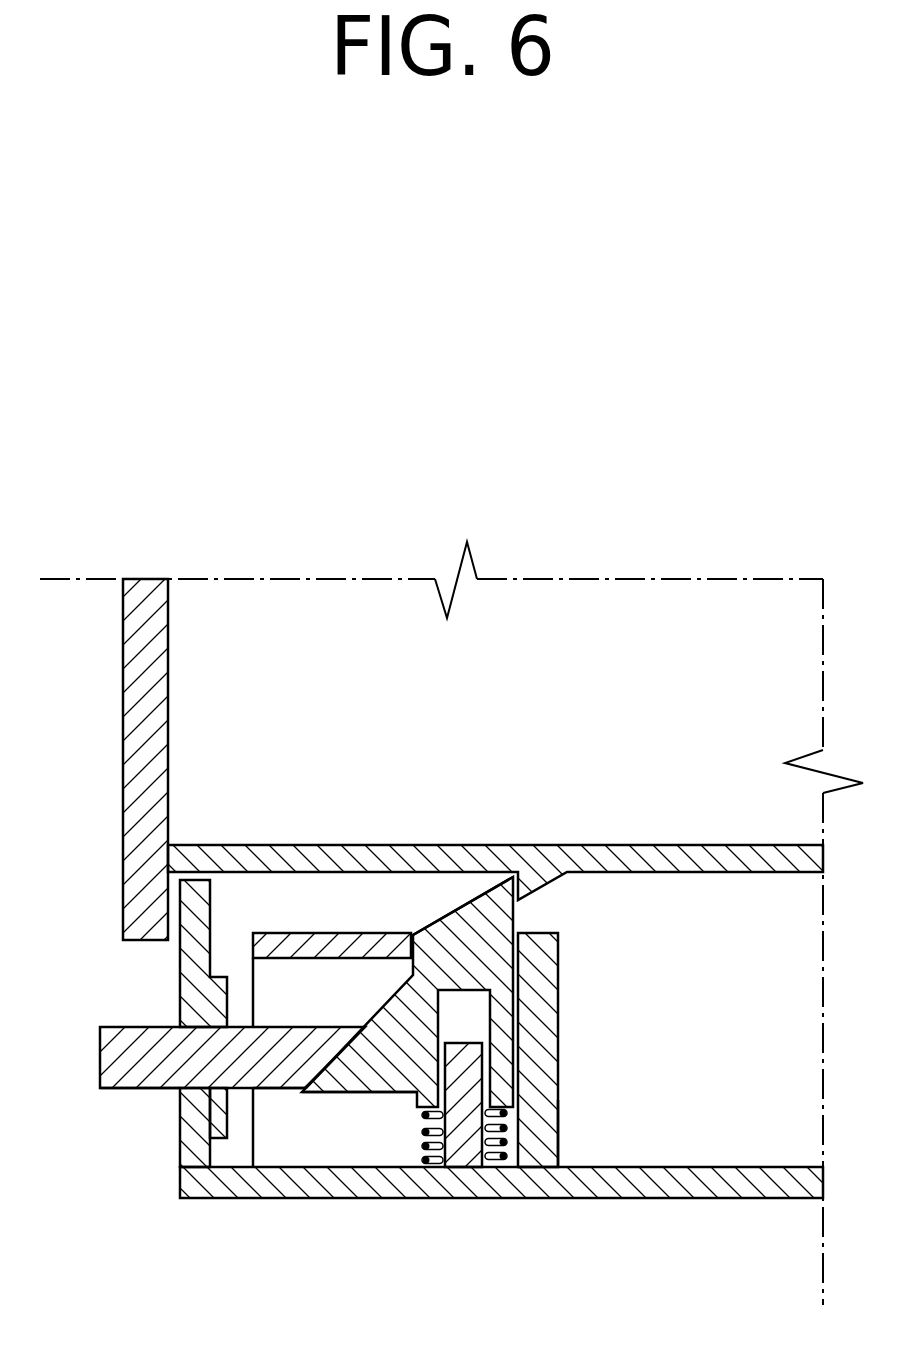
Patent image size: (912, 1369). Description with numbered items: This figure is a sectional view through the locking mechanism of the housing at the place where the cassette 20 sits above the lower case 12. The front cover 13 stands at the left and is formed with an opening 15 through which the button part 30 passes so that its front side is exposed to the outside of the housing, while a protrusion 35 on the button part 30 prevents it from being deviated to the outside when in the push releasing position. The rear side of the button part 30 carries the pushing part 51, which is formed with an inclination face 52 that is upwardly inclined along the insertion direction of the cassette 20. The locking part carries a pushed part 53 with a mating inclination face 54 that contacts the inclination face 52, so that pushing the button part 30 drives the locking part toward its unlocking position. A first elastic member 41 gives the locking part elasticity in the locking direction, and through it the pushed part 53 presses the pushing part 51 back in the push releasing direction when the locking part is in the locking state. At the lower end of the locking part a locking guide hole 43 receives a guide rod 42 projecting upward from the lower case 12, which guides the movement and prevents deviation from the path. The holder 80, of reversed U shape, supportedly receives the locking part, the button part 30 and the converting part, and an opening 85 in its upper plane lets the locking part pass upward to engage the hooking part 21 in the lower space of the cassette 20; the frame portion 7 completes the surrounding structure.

The housing frame 7 is at (560, 1128).
The lower case 12 is at (733, 1180).
The front cover 13 is at (180, 978).
The opening 15 is at (163, 1088).
The cassette 20 is at (147, 738).
The hooking part 21 is at (540, 878).
The button part 30 is at (118, 1078).
The protrusion 35 is at (229, 1120).
The first elastic member 41 is at (507, 1162).
The guide rod 42 is at (457, 1143).
The locking guide hole 43 is at (465, 1022).
The pushing part 51 is at (272, 1052).
The inclination face 52 is at (370, 1055).
The pushed part 53 is at (367, 1093).
The inclination face 54 is at (293, 1087).
The holder 80 is at (328, 933).
The opening 85 is at (447, 935).